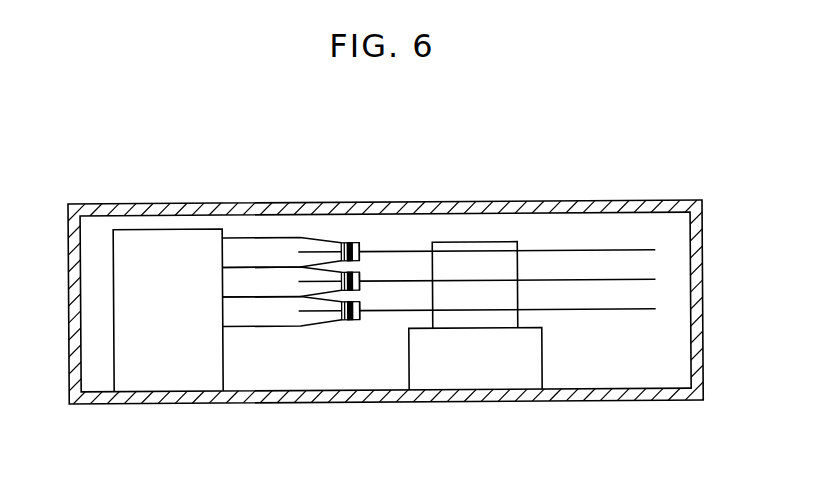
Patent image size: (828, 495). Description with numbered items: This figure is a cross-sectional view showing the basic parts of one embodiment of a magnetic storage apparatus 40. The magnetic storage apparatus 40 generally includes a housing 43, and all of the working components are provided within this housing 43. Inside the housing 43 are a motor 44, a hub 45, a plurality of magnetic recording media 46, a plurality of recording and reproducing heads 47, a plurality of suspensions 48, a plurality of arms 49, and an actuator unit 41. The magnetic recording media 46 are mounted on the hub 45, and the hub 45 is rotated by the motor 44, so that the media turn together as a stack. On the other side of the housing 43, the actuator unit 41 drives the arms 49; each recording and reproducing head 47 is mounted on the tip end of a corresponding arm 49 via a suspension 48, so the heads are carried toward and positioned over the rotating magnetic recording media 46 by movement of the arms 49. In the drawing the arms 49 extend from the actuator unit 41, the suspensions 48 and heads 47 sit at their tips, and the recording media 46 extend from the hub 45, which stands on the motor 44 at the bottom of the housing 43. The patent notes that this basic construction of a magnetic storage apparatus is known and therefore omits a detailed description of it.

The magnetic storage apparatus 40 is at (636, 181).
The actuator unit 41 is at (163, 382).
The housing 43 is at (695, 374).
The motor 44 is at (476, 381).
The hub 45 is at (473, 244).
The magnetic recording media 46 is at (590, 250).
The recording and reproducing heads 47 is at (361, 241).
The suspensions 48 is at (335, 240).
The arms 49 is at (257, 238).